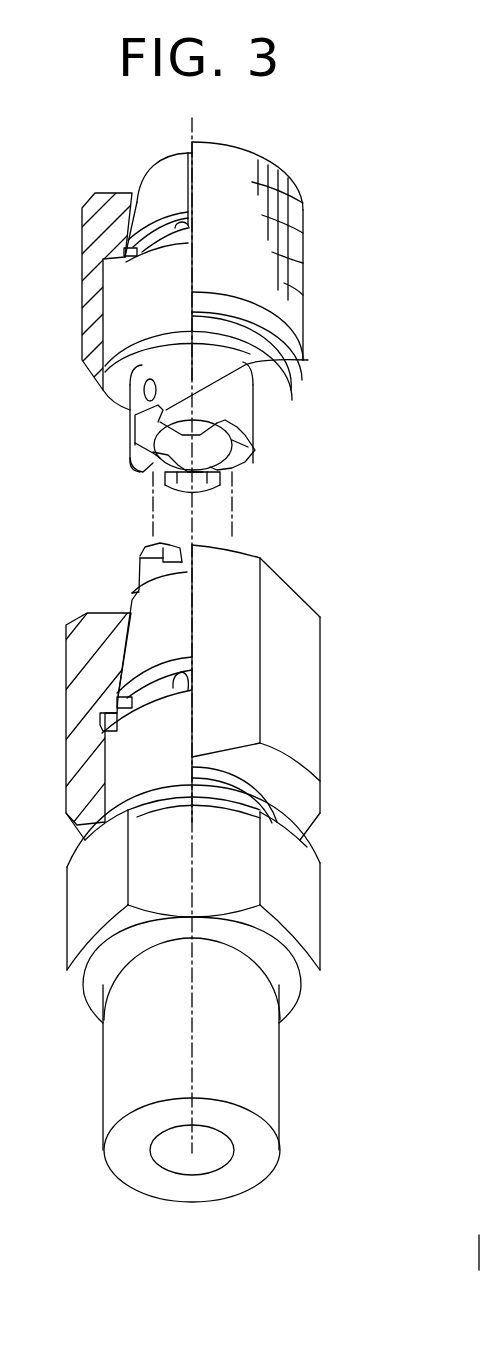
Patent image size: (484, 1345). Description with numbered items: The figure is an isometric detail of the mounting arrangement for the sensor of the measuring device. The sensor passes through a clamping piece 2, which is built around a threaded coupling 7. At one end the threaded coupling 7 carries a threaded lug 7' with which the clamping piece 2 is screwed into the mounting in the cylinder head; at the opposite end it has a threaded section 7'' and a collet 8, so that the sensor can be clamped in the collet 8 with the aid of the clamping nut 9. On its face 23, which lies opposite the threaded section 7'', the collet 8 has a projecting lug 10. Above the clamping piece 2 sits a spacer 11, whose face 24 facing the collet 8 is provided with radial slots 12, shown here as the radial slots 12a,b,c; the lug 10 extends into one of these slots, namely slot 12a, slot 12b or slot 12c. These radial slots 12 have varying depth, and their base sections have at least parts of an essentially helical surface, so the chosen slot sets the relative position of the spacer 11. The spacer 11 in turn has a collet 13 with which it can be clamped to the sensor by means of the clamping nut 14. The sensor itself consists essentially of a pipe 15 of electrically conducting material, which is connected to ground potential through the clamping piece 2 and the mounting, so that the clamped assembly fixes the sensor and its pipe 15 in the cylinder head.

The clamping piece 2 is at (198, 856).
The threaded coupling 7 is at (209, 904).
The threaded lug 7' is at (215, 1093).
The threaded section 7'' is at (80, 746).
The collet 8 is at (170, 636).
The clamping nut 9 is at (250, 733).
The projecting lug 10 is at (133, 605).
The spacer 11 is at (318, 310).
The radial slots 12 is at (234, 408).
The radial slots 12a,b,c is at (253, 449).
The radial slot 12a is at (146, 438).
The radial slot 12b is at (232, 445).
The radial slot 12c is at (186, 472).
The collet 13 is at (182, 183).
The clamping nut 14 is at (273, 250).
The pipe 15 is at (233, 523).
The face 23 is at (142, 572).
The face 24 is at (144, 461).